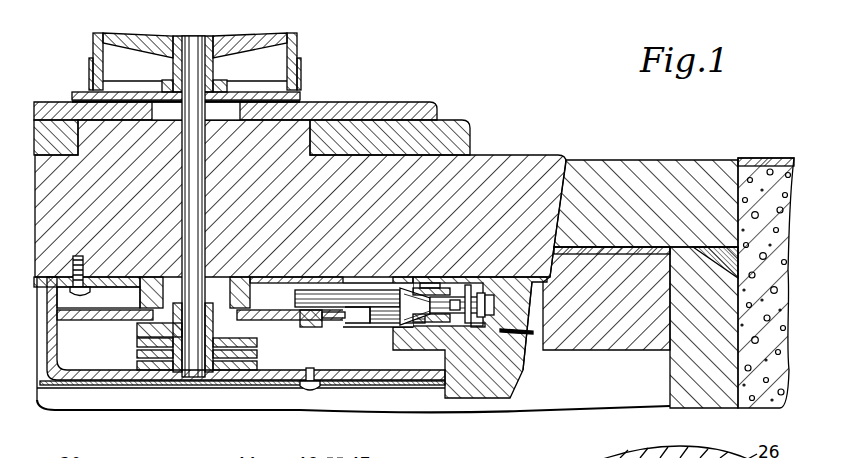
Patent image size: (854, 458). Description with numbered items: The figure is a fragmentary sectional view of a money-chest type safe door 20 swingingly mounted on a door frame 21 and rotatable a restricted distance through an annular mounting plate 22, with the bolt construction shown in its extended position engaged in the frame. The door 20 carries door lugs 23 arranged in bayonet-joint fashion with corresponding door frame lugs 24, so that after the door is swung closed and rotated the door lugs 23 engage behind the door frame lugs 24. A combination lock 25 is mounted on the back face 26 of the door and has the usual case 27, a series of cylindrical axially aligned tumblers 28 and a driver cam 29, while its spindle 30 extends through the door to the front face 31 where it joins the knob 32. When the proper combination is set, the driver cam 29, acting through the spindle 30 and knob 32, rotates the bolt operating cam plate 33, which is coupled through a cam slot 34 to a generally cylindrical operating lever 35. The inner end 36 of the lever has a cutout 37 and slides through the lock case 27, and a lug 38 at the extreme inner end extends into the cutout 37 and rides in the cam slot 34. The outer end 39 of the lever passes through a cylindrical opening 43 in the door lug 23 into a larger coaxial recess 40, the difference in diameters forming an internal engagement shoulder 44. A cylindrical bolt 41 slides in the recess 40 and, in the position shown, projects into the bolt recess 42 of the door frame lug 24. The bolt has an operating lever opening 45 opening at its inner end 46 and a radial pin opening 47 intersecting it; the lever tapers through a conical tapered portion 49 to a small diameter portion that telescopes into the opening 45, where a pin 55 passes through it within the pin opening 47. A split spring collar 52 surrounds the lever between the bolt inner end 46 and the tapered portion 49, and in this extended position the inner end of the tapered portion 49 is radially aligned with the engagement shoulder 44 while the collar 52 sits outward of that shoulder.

The safe door 20 is at (97, 148).
The door frame 21 is at (613, 183).
The annular mounting plate 22 is at (414, 135).
The door lugs 23 is at (468, 381).
The door frame lugs 24 is at (616, 327).
The combination lock 25 is at (45, 360).
The back face 26 is at (47, 279).
The lock case 27 is at (120, 381).
The tumblers 28 is at (223, 371).
The driver cam 29 is at (140, 330).
The spindle 30 is at (200, 183).
The door front face 31 is at (351, 100).
The knob 32 is at (242, 34).
The bolt operating cam plate 33 is at (268, 322).
The cam slot 34 is at (331, 322).
The operating lever 35 is at (400, 322).
The inner end 36 is at (352, 291).
The cutout 37 is at (354, 309).
The lug 38 is at (310, 329).
The outer end 39 is at (444, 323).
The recess 40 is at (436, 286).
The bolt 41 is at (534, 310).
The bolt recess 42 is at (533, 332).
The opening 43 is at (406, 283).
The engagement shoulder 44 is at (416, 328).
The operating lever opening 45 is at (478, 311).
The bolt inner end 46 is at (479, 295).
The pin opening 47 is at (489, 294).
The tapered portion 49 is at (394, 298).
The split spring collar 52 is at (436, 321).
The pin 55 is at (468, 286).